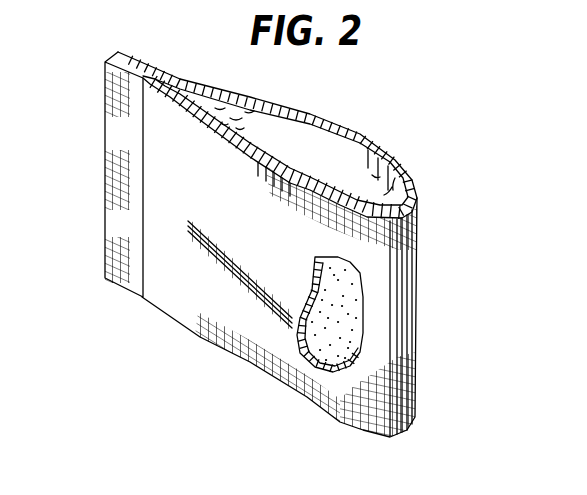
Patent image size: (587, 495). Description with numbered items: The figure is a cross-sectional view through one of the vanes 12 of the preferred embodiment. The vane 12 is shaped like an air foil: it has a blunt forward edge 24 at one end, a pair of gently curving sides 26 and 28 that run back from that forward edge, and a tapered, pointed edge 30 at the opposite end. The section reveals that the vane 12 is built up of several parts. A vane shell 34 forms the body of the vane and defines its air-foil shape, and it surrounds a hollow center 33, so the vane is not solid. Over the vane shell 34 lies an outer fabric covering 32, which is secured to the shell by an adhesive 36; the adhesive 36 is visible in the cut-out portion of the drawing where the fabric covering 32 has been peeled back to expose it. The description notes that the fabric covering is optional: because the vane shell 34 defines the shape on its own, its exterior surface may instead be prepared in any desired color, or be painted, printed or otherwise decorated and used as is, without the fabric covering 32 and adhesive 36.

The vane 12 is at (440, 326).
The blunt forward edge 24 is at (400, 347).
The gently curving side 26 is at (223, 292).
The gently curving side 28 is at (283, 105).
The tapered, pointed edge 30 is at (104, 176).
The outer fabric covering 32 is at (397, 248).
The hollow center 33 is at (327, 160).
The vane shell 34 is at (357, 157).
The adhesive 36 is at (297, 350).